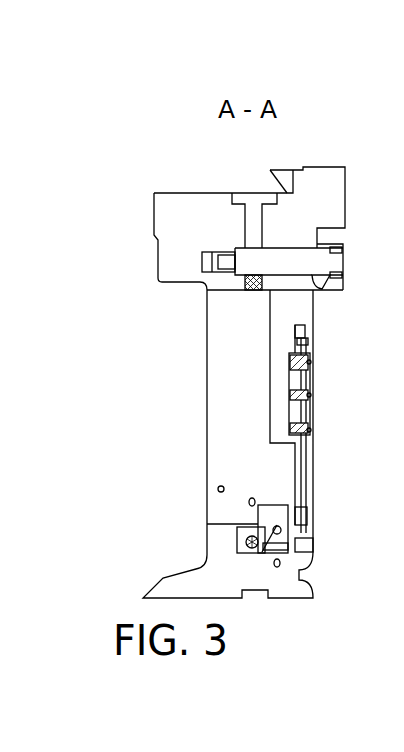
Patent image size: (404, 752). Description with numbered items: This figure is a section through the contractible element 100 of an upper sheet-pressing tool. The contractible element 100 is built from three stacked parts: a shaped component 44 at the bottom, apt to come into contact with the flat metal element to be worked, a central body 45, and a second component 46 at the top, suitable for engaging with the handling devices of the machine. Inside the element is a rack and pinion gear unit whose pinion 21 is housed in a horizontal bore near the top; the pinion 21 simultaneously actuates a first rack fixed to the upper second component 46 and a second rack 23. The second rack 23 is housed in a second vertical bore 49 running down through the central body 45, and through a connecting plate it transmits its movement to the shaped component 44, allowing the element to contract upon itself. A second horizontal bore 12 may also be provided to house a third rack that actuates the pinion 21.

The contractible element 100 is at (340, 115).
The second component 46 is at (165, 216).
The pinion 21 is at (313, 259).
The second horizontal bore 12 is at (320, 279).
The second rack 23 is at (287, 345).
The central body 45 is at (218, 387).
The second vertical bore 49 is at (293, 467).
The shaped component 44 is at (197, 585).